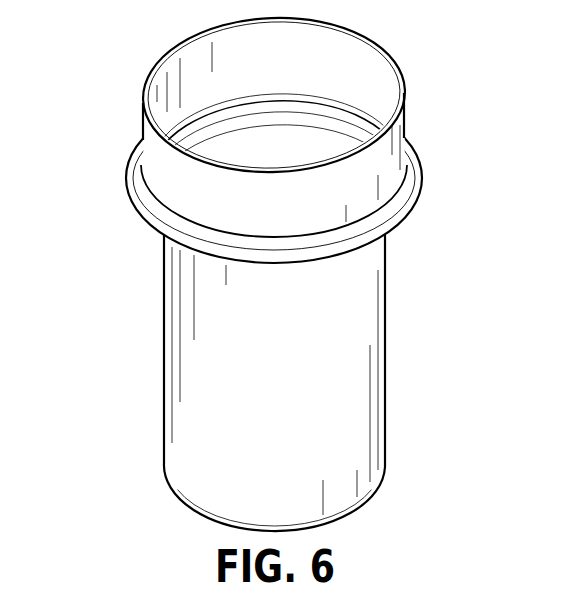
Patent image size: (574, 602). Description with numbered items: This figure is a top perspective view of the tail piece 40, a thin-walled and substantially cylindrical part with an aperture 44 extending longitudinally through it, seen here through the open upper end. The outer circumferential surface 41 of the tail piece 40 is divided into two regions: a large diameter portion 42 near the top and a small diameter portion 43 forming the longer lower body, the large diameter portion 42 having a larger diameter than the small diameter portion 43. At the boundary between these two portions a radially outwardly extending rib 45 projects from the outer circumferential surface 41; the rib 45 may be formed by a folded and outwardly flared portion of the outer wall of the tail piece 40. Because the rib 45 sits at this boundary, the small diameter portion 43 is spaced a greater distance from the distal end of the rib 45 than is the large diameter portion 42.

The tail piece 40 is at (269, 265).
The outer circumferential surface 41 is at (371, 363).
The large diameter portion 42 is at (405, 116).
The small diameter portion 43 is at (387, 292).
The aperture 44 is at (208, 92).
The rib 45 is at (424, 176).